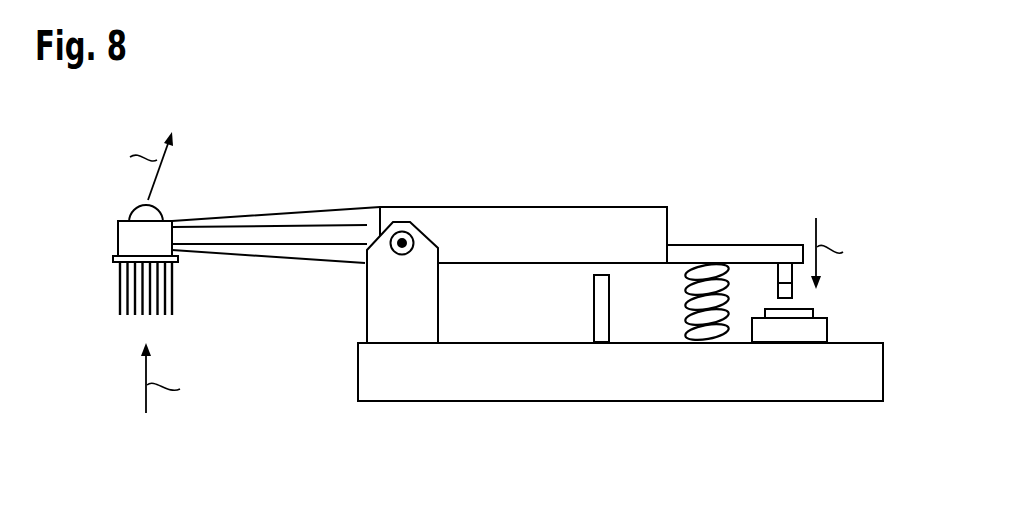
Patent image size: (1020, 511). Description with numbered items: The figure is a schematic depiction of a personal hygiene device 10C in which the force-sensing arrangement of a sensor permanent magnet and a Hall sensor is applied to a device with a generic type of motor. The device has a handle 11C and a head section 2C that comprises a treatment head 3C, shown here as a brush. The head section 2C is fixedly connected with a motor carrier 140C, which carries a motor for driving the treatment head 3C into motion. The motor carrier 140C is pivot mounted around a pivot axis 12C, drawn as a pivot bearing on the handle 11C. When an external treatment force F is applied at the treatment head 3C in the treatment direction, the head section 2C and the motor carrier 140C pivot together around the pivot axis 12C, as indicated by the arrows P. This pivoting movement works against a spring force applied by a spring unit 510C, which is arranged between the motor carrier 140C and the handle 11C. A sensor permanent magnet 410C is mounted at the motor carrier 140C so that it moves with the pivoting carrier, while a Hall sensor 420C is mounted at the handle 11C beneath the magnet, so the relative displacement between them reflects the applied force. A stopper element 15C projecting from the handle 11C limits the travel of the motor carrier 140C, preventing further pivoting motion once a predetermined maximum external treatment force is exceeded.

The personal hygiene device 10C is at (426, 146).
The head section 2C is at (253, 203).
The treatment head 3C is at (142, 238).
The motor carrier 140C is at (524, 233).
The pivot axis 12C is at (402, 243).
The stopper element 15C is at (602, 323).
The spring unit 510C is at (705, 313).
The sensor permanent magnet 410C is at (784, 272).
The Hall sensor 420C is at (787, 312).
The handle 11C is at (833, 373).